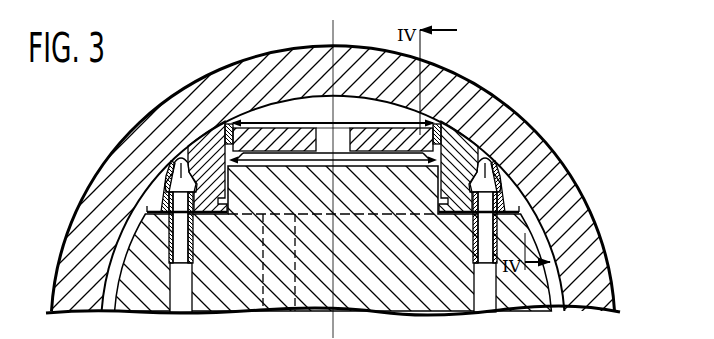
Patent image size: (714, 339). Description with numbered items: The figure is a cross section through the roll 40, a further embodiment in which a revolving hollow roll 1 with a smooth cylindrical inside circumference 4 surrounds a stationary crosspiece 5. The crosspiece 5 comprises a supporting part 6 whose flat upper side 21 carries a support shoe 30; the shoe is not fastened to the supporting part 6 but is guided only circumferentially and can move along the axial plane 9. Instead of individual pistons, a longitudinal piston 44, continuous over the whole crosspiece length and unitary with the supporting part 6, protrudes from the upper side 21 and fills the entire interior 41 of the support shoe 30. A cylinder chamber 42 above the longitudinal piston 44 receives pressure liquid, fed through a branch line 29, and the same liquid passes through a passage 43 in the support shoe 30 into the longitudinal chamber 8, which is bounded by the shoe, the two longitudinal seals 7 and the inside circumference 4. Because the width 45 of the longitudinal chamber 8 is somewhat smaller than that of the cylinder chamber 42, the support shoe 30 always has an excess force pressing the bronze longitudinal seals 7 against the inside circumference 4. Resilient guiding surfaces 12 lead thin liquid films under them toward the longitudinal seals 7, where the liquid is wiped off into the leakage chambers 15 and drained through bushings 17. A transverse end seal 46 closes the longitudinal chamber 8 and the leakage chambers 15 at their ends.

The hollow roll 1 is at (333, 252).
The inside circumference 4 is at (540, 229).
The crosspiece 5 is at (565, 258).
The supporting part 6 is at (536, 297).
The longitudinal seals 7 is at (224, 104).
The longitudinal chamber 8 is at (263, 115).
The axial plane 9 is at (333, 330).
The guiding surfaces 12 is at (512, 171).
The leakage chambers 15 is at (173, 158).
The bushings 17 is at (163, 192).
The upper side 21 is at (150, 212).
The branch line 29 is at (295, 283).
The support shoe 30 is at (478, 140).
The roll 40 is at (556, 78).
The interior 41 is at (226, 124).
The cylinder chamber 42 is at (370, 158).
The passage 43 is at (340, 138).
The longitudinal piston 44 is at (492, 146).
The width 45 is at (303, 123).
The transverse end seal 46 is at (278, 160).